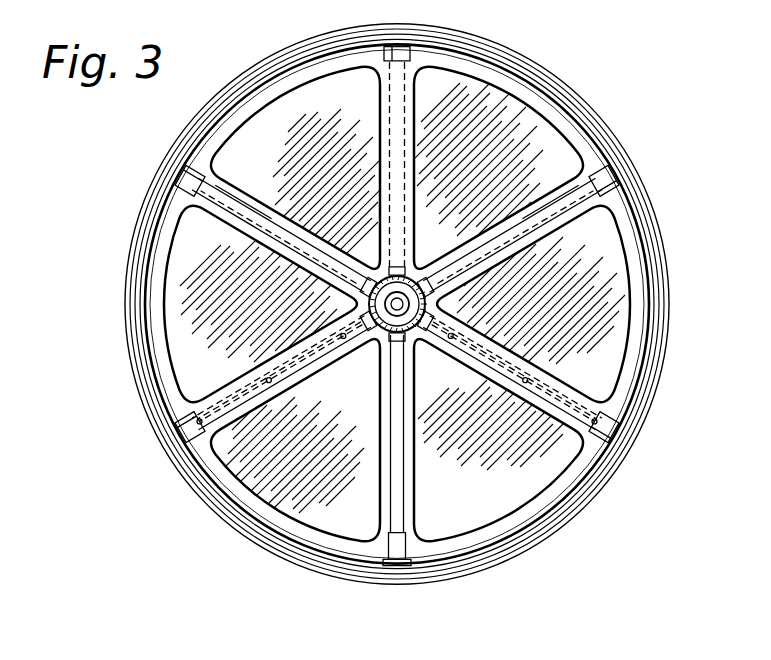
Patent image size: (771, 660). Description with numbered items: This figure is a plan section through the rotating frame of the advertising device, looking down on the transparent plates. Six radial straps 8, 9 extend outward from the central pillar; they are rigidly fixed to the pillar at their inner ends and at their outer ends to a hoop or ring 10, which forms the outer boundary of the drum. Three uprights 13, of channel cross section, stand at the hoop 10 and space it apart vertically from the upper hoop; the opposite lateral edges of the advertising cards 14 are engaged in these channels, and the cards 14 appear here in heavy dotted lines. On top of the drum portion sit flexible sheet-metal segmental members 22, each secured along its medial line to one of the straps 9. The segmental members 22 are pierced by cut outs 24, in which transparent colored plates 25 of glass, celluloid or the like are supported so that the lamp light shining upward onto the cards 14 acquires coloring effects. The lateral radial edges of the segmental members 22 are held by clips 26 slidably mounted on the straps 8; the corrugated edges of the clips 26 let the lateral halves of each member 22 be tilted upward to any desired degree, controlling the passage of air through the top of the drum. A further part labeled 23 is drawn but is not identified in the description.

The straps 8 is at (238, 205).
The straps 9 is at (547, 403).
The hoop or ring 10 is at (191, 486).
The uprights 13 is at (174, 434).
The advertising cards 14 is at (357, 350).
The segmental members 22 is at (293, 539).
The rivets 23 is at (266, 379).
The cut outs 24 is at (158, 352).
The transparent colored plates 25 is at (322, 492).
The clips 26 is at (397, 567).